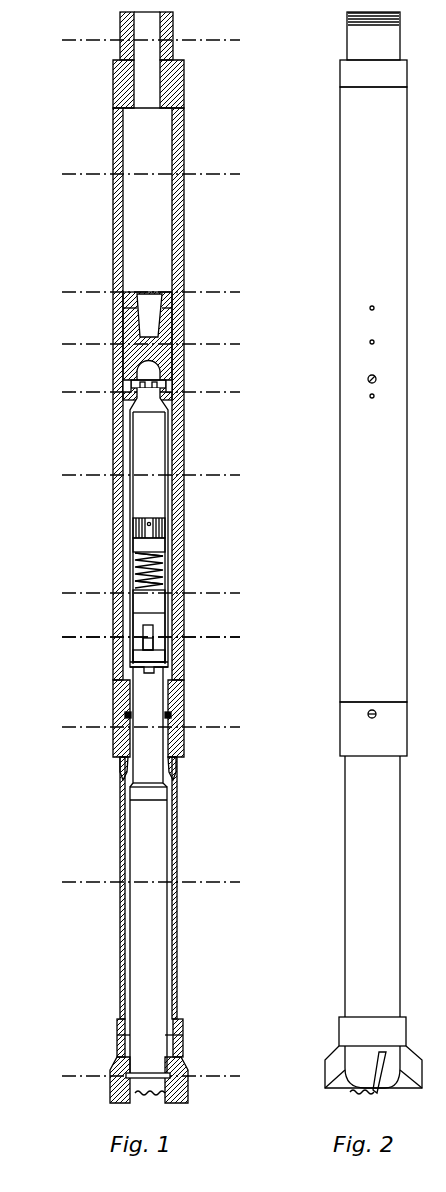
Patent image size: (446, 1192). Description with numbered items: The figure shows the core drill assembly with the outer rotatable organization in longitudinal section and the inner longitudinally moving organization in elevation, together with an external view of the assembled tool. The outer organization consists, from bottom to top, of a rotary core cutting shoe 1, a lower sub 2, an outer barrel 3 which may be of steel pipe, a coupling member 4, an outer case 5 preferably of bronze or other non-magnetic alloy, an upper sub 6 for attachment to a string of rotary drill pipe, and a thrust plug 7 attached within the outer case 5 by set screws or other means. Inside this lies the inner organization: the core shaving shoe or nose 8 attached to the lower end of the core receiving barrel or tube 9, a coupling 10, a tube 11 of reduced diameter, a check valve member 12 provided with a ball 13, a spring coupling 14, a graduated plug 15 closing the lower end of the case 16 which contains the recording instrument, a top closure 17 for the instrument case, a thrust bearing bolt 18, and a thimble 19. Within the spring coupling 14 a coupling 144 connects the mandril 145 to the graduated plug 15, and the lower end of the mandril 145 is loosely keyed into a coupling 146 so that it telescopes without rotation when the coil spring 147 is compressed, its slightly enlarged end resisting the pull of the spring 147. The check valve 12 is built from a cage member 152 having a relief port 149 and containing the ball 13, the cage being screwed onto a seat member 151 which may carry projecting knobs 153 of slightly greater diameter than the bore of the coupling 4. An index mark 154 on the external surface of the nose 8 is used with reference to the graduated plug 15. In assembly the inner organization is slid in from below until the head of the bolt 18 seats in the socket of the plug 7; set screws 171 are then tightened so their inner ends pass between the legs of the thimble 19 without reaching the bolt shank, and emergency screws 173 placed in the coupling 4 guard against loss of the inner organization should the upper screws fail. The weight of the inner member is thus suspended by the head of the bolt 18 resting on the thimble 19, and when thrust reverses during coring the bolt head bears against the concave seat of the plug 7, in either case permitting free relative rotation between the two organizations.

In FIG. 1, the rotary core cutting shoe 1 is at (110, 1091).
In FIG. 2, the rotary core cutting shoe 1 is at (373, 1069).
In FIG. 1, the lower sub 2 is at (117, 1040).
In FIG. 2, the lower sub 2 is at (372, 1031).
In FIG. 1, the outer barrel 3 is at (120, 941).
In FIG. 2, the outer barrel 3 is at (372, 514).
In FIG. 1, the coupling member 4 is at (84, 745).
In FIG. 2, the coupling member 4 is at (373, 729).
In FIG. 1, the outer case 5 is at (115, 204).
In FIG. 2, the outer case 5 is at (373, 394).
In FIG. 1, the upper sub 6 is at (117, 70).
In FIG. 2, the upper sub 6 is at (373, 73).
In FIG. 1, the thrust plug 7 is at (124, 336).
In FIG. 1, the inner core shaving shoe or nose 8 is at (82, 1110).
In FIG. 2, the inner core shaving shoe or nose 8 is at (356, 1094).
In FIG. 1, the core receiving barrel or tube 9 is at (140, 976).
In FIG. 1, the coupling 10 is at (146, 795).
In FIG. 1, the tube of reduced diameter 11 is at (148, 769).
In FIG. 1, the check valve member 12 is at (135, 653).
In FIG. 1, the ball 13 is at (146, 645).
In FIG. 1, the spring coupling 14 is at (135, 574).
In FIG. 1, the graduated plug 15 is at (133, 531).
In FIG. 1, the case 16 is at (140, 497).
In FIG. 1, the top closure 17 is at (146, 409).
In FIG. 1, the thrust bearing bolt 18 is at (146, 368).
In FIG. 1, the thimble 19 is at (135, 384).
In FIG. 1, the coupling 144 is at (158, 547).
In FIG. 1, the mandril 145 is at (165, 557).
In FIG. 1, the coil spring 147 is at (165, 576).
In FIG. 1, the coupling 146 is at (158, 603).
In FIG. 1, the relief port 149 is at (153, 633).
In FIG. 1, the seat member 151 is at (165, 663).
In FIG. 1, the cage member 152 is at (155, 620).
In FIG. 1, the projecting knobs 153 is at (168, 670).
In FIG. 1, the index mark 154 is at (150, 1076).
In FIG. 1, the set screws 171 is at (176, 388).
In FIG. 1, the emergency screws 173 is at (176, 715).